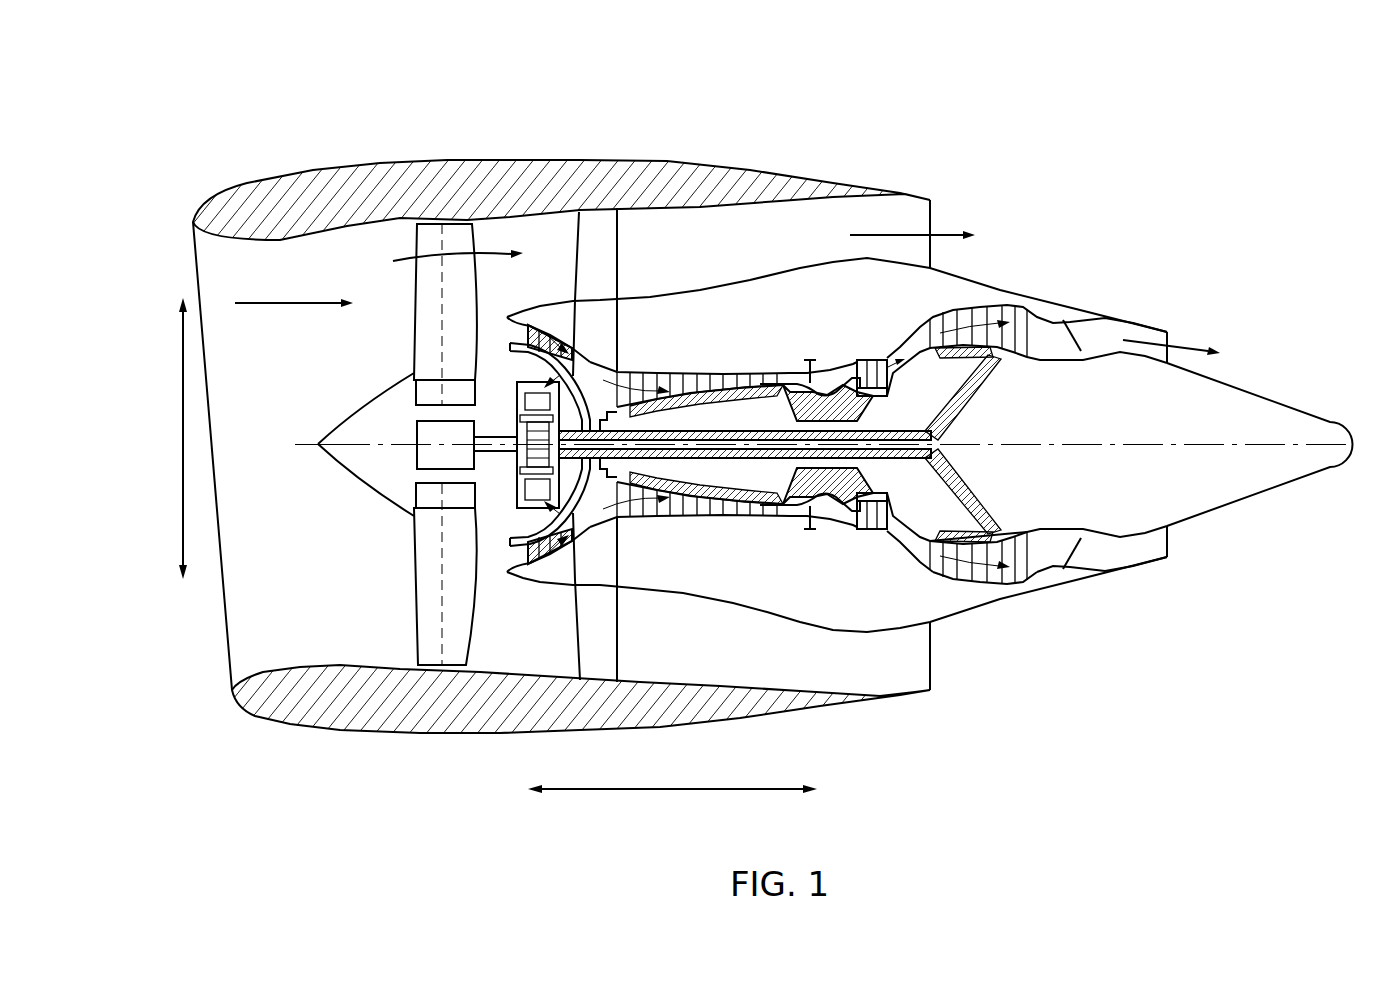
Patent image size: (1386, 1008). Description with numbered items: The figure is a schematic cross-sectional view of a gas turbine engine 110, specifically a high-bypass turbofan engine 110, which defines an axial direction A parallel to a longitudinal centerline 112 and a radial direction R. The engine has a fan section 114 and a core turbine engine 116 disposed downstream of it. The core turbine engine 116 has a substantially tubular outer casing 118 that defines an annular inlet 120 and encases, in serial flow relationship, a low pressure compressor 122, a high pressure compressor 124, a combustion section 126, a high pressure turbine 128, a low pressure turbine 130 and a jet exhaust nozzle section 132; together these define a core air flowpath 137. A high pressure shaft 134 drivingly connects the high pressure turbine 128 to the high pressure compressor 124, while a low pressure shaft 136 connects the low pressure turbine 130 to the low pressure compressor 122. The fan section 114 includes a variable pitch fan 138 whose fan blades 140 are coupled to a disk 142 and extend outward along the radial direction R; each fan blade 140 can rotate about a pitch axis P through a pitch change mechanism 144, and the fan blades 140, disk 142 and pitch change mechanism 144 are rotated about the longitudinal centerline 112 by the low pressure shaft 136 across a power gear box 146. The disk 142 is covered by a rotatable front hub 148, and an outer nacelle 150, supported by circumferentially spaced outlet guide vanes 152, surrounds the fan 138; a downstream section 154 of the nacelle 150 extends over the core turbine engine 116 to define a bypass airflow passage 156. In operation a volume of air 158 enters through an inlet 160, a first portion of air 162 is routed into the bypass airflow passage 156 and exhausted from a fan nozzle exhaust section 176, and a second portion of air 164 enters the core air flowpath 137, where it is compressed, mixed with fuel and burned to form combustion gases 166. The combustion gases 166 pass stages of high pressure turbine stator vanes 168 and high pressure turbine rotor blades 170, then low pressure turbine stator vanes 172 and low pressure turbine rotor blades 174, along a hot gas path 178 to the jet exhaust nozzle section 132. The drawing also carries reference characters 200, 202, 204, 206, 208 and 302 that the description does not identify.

The gas turbine engine 110 is at (1037, 91).
The longitudinal centerline 112 is at (1247, 444).
The fan section 114 is at (327, 247).
The core turbine engine 116 is at (783, 312).
The outer casing 118 is at (773, 613).
The annular inlet 120 is at (514, 560).
The low pressure compressor 122 is at (577, 560).
The high pressure compressor 124 is at (647, 520).
The combustion section 126 is at (826, 525).
The high pressure turbine 128 is at (903, 514).
The low pressure turbine 130 is at (1017, 588).
The jet exhaust nozzle section 132 is at (1082, 560).
The high pressure shaft 134 is at (840, 408).
The low pressure shaft 136 is at (905, 428).
The core air flowpath 137 is at (590, 550).
The variable pitch fan 138 is at (367, 493).
The fan blades 140 is at (450, 525).
The disk 142 is at (427, 395).
The pitch change mechanism 144 is at (417, 391).
The power gear box 146 is at (515, 350).
The rotatable front hub 148 is at (335, 465).
The outer nacelle 150 is at (443, 733).
The outlet guide vanes 152 is at (620, 240).
The downstream section of nacelle 154 is at (858, 178).
The bypass airflow passage 156 is at (766, 249).
The volume of air 158 is at (277, 293).
The inlet 160 is at (228, 672).
The first portion of air 162 is at (900, 230).
The second portion of air 164 is at (500, 340).
The combustion gases 166 is at (875, 362).
The HP turbine stator vanes 168 is at (843, 523).
The HP turbine rotor blades 170 is at (862, 512).
The LP turbine stator vanes 172 is at (937, 573).
The LP turbine rotor blades 174 is at (947, 580).
The fan nozzle exhaust section 176 is at (918, 217).
The hot gas path 178 is at (910, 322).
The compressor flow arrow 200 is at (597, 340).
The compressor casing 202 is at (665, 512).
The inlet guide vanes 204 is at (570, 348).
The shaft coupling 206 is at (480, 495).
The spinner nose 208 is at (325, 447).
The bearing housing 302 is at (548, 405).
The pitch axis P is at (455, 222).
The radial direction R is at (183, 442).
The axial direction A is at (673, 783).